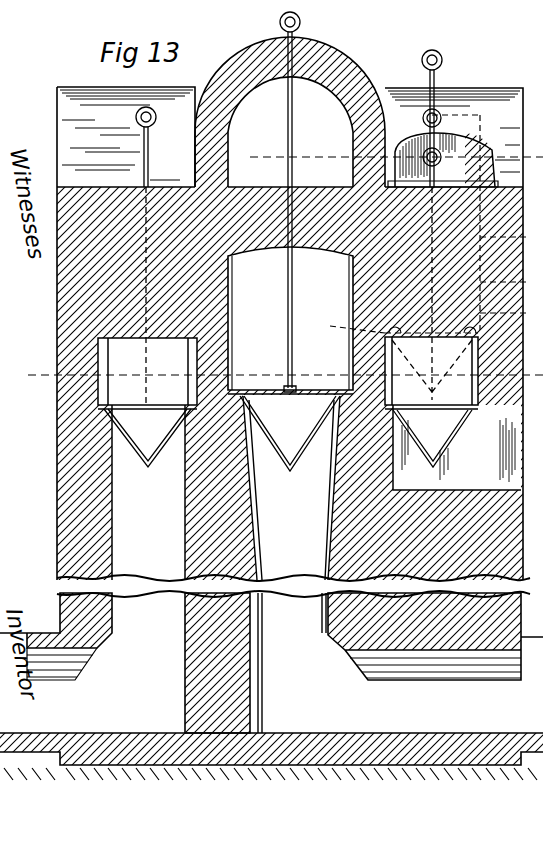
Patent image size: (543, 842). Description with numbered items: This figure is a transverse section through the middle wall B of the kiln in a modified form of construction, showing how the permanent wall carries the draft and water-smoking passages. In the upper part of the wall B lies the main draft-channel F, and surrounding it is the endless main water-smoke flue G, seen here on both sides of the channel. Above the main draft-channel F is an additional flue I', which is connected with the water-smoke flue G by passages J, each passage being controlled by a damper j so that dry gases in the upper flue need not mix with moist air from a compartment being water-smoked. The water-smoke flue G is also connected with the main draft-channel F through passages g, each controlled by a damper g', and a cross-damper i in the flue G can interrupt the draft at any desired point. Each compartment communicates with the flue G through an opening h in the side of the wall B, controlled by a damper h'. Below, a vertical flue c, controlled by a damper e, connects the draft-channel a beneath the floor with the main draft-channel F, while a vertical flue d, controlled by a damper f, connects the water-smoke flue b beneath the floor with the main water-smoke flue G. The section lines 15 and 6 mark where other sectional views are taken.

The damper e is at (292, 386).
The damper j is at (432, 219).
The damper g' is at (448, 110).
The damper h' is at (465, 294).
The flue I' is at (290, 112).
The section line 15 is at (394, 157).
The passage J is at (442, 162).
The cross-damper i is at (483, 222).
The passage g is at (426, 308).
The main draft-channel F is at (290, 359).
The wall B is at (57, 284).
The section line 6 is at (272, 375).
The damper f is at (125, 424).
The main water-smoke flue G is at (288, 397).
The opening h is at (457, 447).
The vertical flue d is at (148, 492).
The vertical flue c is at (291, 564).
The water-smoke flue b is at (125, 663).
The draft-channel a is at (271, 679).